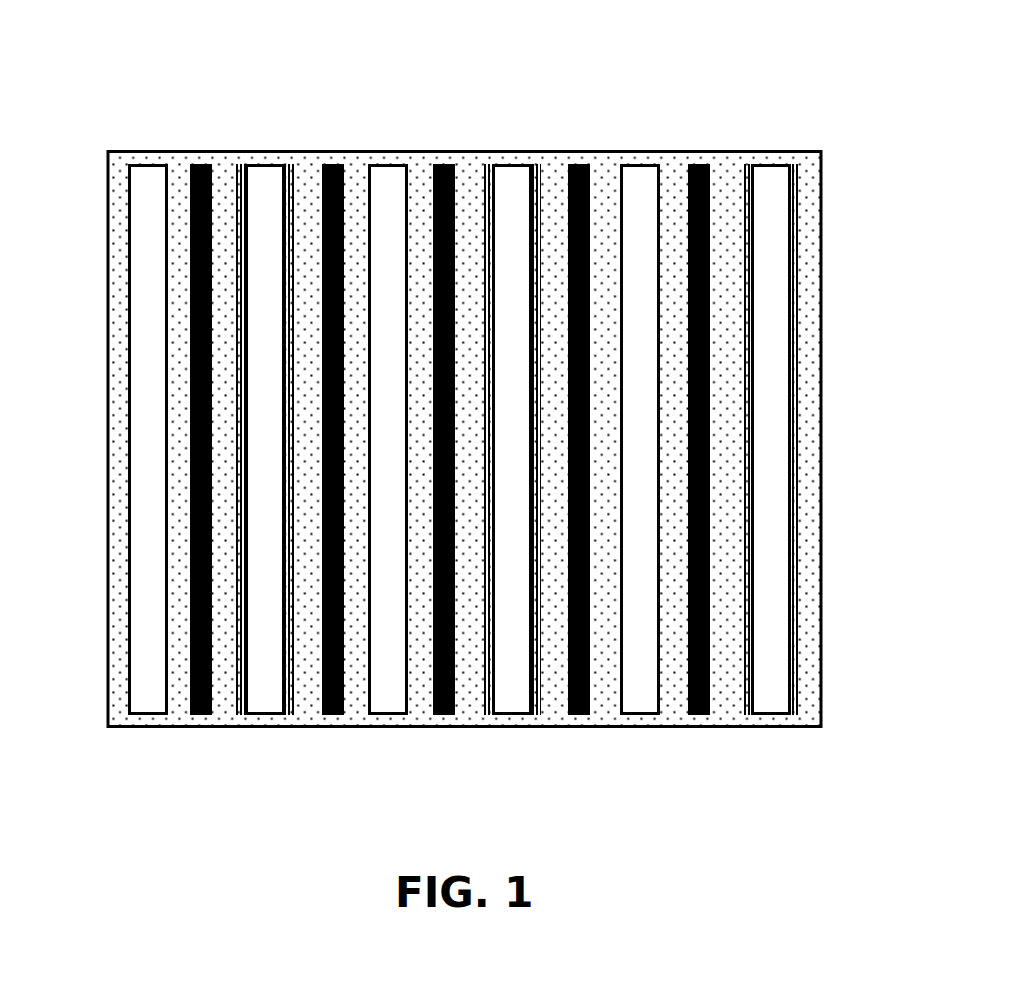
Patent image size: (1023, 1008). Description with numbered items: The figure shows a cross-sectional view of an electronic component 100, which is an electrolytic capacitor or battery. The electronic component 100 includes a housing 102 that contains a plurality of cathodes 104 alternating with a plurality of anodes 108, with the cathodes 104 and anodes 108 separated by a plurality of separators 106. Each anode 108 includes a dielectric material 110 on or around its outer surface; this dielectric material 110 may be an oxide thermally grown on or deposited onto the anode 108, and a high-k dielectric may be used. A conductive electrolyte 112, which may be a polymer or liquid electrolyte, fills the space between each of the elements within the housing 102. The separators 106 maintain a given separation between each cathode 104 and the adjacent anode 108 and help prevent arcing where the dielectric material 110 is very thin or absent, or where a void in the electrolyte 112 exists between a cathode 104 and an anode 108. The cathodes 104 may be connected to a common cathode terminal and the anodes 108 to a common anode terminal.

The electronic component 100 is at (508, 43).
The housing 102 is at (823, 188).
The cathodes 104 is at (140, 712).
The separators 106 is at (202, 712).
The anodes 108 is at (263, 712).
The dielectric material 110 is at (235, 163).
The conductive electrolyte 112 is at (677, 177).